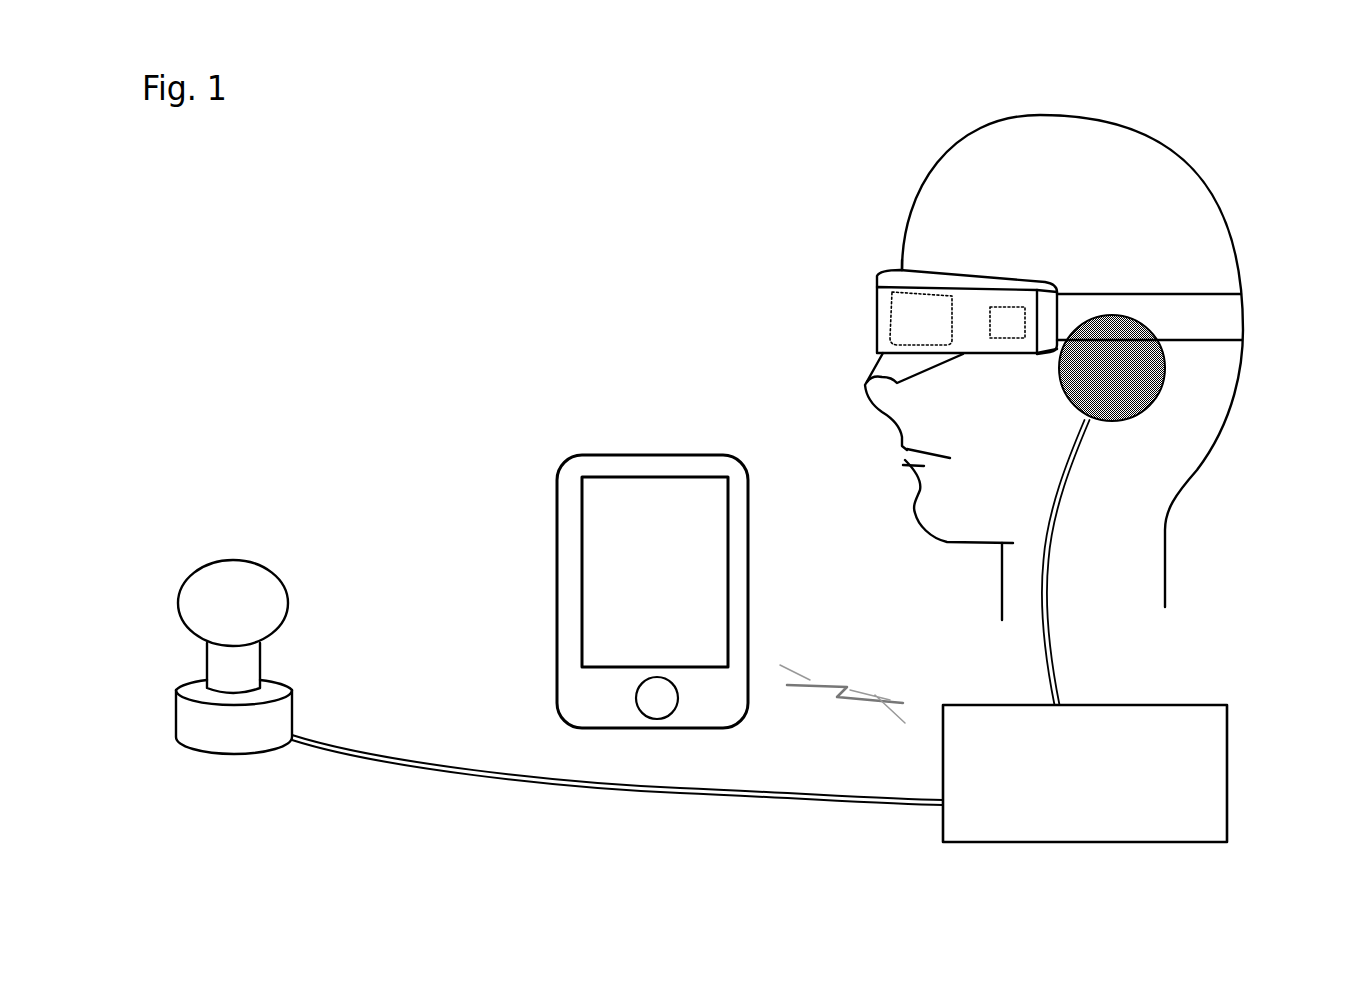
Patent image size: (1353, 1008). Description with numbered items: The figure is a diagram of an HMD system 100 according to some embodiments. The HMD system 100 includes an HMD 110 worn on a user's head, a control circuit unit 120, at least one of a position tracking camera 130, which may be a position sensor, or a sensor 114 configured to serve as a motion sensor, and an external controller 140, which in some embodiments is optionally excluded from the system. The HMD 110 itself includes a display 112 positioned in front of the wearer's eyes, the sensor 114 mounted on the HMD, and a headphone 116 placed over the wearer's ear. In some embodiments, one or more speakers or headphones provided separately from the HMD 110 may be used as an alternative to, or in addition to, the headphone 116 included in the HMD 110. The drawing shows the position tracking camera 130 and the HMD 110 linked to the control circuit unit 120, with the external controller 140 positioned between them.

The HMD system 100 is at (312, 233).
The HMD 110 is at (877, 284).
The display 112 is at (902, 333).
The sensor 114 is at (1005, 327).
The headphone 116 is at (1105, 318).
The control circuit unit 120 is at (1213, 767).
The position tracking camera 130 is at (263, 588).
The external controller 140 is at (602, 467).